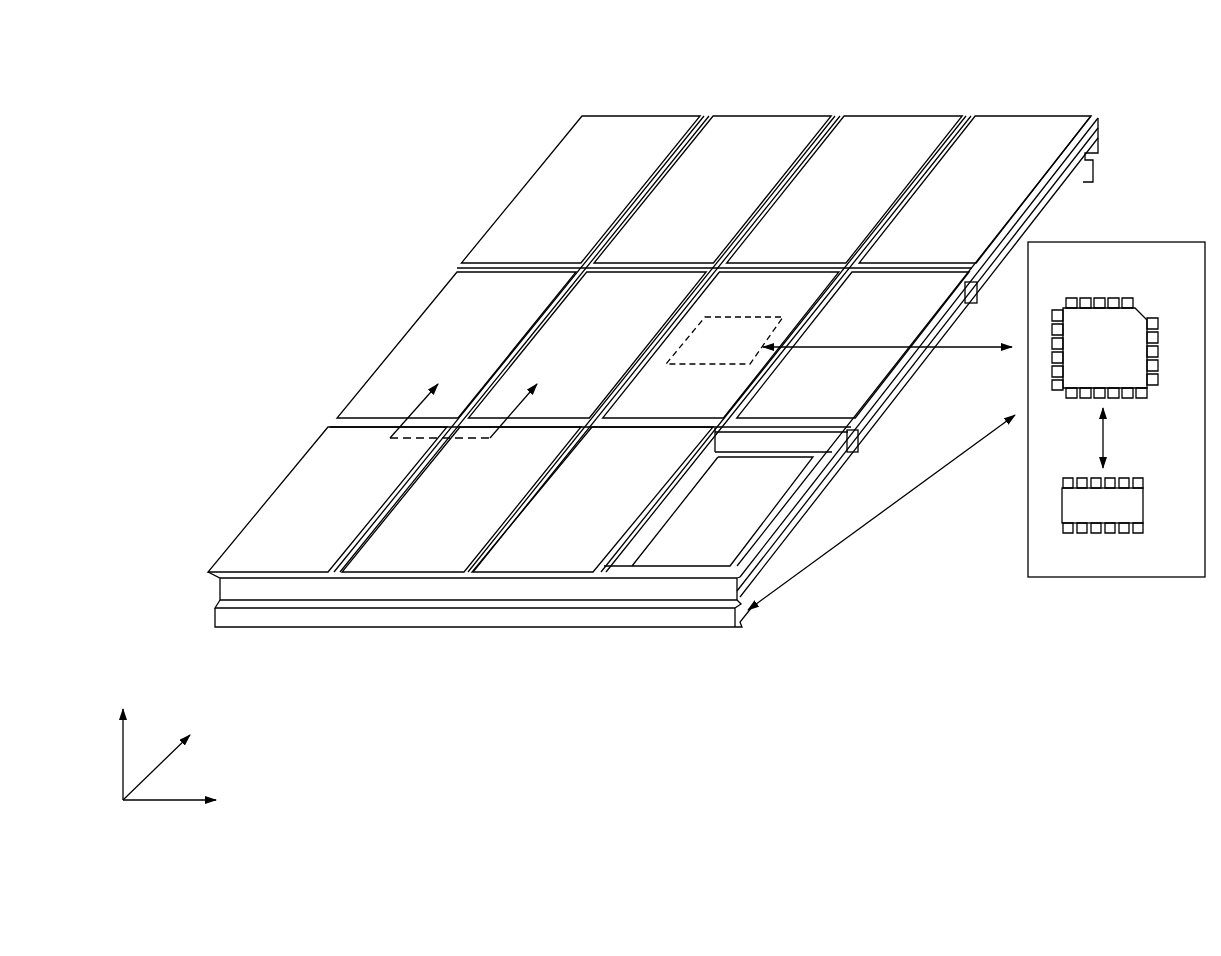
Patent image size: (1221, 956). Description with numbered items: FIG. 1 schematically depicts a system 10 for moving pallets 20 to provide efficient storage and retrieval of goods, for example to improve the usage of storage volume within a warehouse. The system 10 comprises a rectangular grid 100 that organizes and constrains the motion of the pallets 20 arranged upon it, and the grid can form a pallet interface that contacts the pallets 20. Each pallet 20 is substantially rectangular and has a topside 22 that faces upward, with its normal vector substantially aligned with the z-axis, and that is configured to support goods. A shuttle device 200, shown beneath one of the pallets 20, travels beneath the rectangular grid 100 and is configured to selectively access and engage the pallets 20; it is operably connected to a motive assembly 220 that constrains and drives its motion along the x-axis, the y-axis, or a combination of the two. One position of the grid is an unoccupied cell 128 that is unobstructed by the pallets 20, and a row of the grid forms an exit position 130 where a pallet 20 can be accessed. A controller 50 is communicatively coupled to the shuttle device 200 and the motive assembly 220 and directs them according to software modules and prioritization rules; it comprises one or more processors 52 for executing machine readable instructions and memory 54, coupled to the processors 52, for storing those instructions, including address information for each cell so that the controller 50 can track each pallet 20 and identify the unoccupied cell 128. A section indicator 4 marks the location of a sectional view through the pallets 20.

The system 10 is at (303, 110).
The pallet 20 is at (624, 132).
The topside 22 is at (577, 193).
The shuttle device 200 is at (688, 337).
The unoccupied cell 128 is at (724, 522).
The exit position 130 is at (478, 592).
The motive assembly 220 is at (673, 638).
The rectangular grid 100 is at (168, 588).
The controller 50 is at (1168, 242).
The processor 52 is at (1135, 322).
The memory 54 is at (1135, 495).
The section line 4 is at (468, 399).